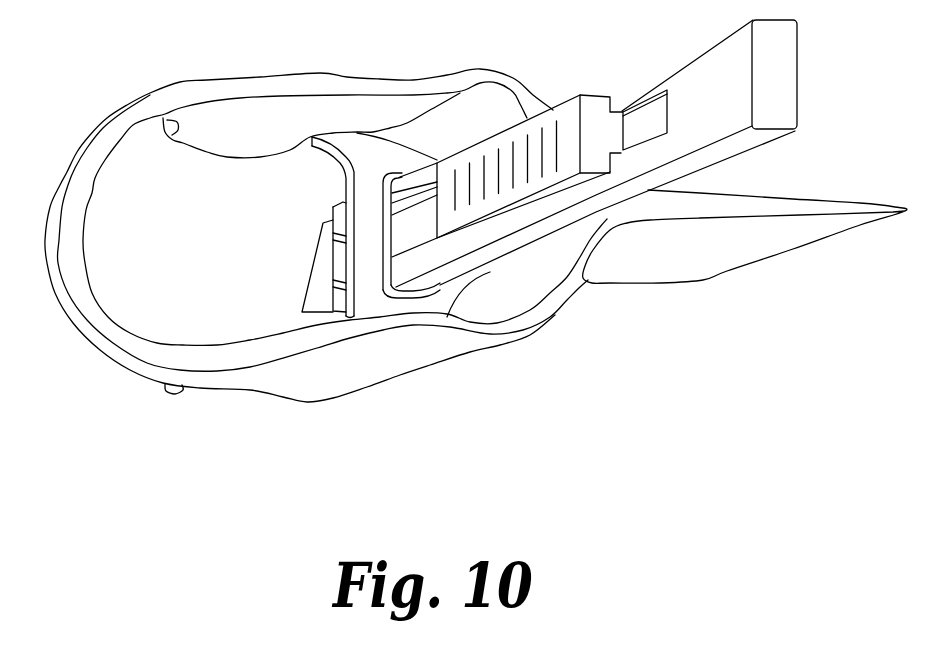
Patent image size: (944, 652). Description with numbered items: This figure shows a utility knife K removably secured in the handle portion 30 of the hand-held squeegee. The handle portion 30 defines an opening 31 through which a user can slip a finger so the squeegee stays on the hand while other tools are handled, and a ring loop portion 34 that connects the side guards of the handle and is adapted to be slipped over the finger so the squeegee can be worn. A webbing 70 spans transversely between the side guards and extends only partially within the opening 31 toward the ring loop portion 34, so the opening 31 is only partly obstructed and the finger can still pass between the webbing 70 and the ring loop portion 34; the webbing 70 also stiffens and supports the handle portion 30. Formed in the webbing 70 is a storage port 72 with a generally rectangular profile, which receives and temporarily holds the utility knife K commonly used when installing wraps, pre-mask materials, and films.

The handle portion 30 is at (597, 438).
The opening 31 is at (108, 230).
The ring loop portion 34 is at (68, 124).
The webbing 70 is at (372, 162).
The storage port 72 is at (413, 318).
The utility knife K is at (723, 62).